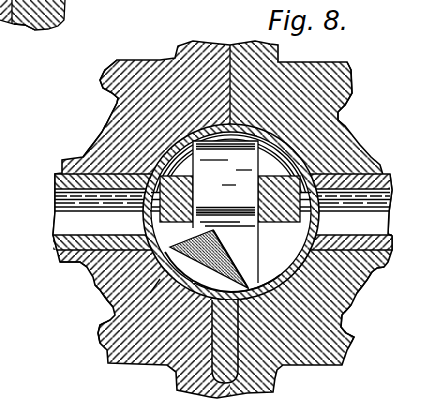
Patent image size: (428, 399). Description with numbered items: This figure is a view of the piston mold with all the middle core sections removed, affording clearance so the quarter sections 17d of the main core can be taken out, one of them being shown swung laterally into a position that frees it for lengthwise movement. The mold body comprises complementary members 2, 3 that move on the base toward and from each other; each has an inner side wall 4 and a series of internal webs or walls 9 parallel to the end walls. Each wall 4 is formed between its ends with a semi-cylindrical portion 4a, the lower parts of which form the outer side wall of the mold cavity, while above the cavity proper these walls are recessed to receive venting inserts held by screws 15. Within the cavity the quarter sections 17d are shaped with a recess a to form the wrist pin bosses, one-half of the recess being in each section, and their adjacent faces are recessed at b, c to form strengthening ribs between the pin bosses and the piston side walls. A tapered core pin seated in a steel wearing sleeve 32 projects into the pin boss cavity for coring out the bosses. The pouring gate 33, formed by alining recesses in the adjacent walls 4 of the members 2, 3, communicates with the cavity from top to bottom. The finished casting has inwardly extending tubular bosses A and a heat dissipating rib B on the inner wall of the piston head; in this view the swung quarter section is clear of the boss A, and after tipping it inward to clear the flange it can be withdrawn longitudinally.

The screws 15 is at (80, 0).
The inner side wall 4 is at (30, 31).
The complementary member 2 is at (162, 78).
The complementary member 3 is at (291, 77).
The internal webs or walls 9 is at (103, 87).
The semi-cylindrical portion 4a is at (355, 296).
The steel wearing sleeve 32 is at (382, 165).
The quarter sections 17d is at (176, 148).
The pouring gate 33 is at (212, 337).
The tubular bosses A is at (225, 212).
The heat dissipating rib B is at (225, 203).
The recess a is at (252, 223).
The recess b is at (150, 293).
The recess c is at (96, 268).